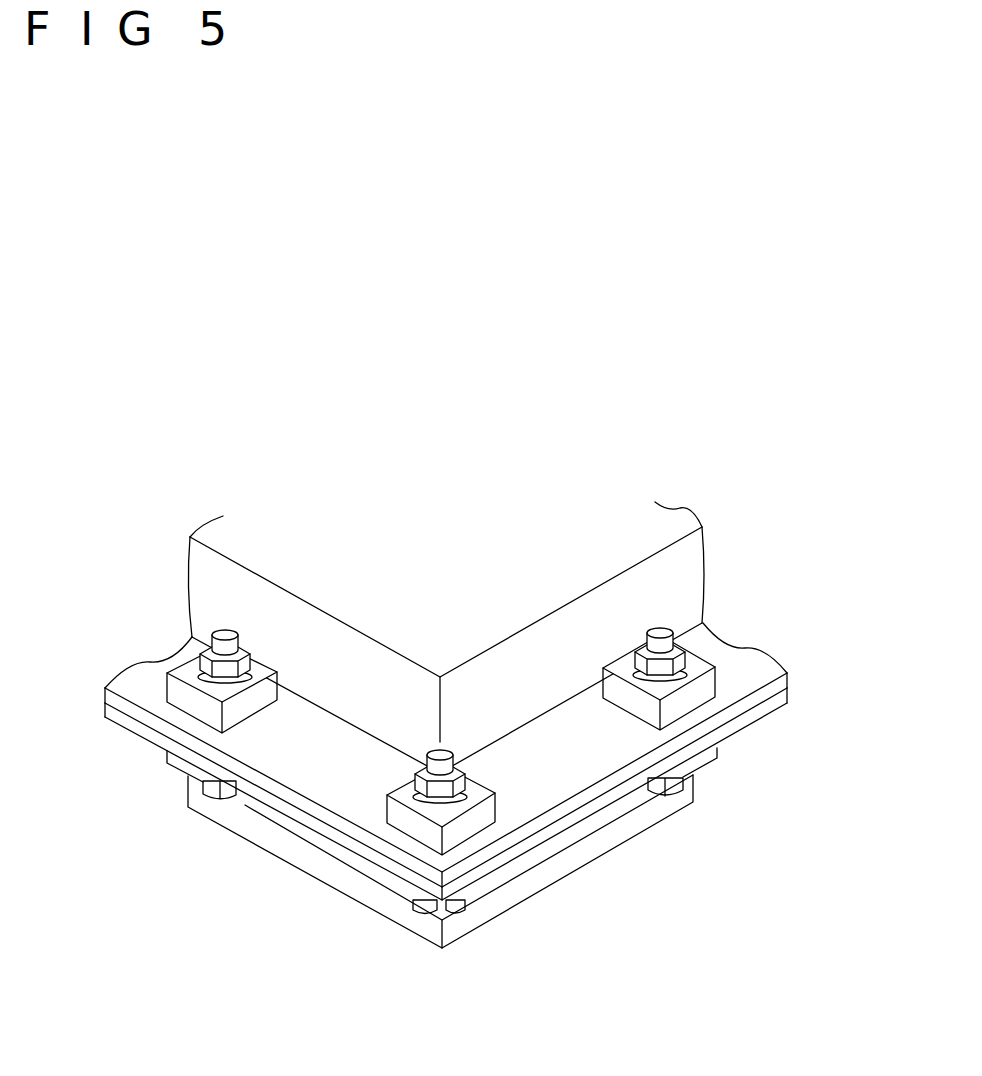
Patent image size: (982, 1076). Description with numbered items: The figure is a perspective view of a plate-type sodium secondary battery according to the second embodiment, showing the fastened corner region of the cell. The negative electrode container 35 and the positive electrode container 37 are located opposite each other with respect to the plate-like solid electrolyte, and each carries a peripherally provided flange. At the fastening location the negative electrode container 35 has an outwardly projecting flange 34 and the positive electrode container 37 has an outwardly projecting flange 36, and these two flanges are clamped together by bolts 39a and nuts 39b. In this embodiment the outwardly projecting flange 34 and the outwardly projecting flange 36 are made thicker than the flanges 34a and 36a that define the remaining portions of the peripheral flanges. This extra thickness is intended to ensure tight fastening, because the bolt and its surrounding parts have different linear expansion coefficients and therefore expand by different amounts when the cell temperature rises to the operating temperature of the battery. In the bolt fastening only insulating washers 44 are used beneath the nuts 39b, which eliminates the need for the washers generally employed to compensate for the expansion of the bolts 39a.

The outwardly projecting flange 34 is at (446, 843).
The flange 34a is at (578, 818).
The negative electrode container 35 is at (478, 927).
The outwardly projecting flange 36 is at (463, 753).
The flange 36a is at (590, 762).
The positive electrode container 37 is at (682, 510).
The bolts 39a is at (693, 782).
The nuts 39b is at (680, 635).
The insulating washers 44 is at (430, 805).